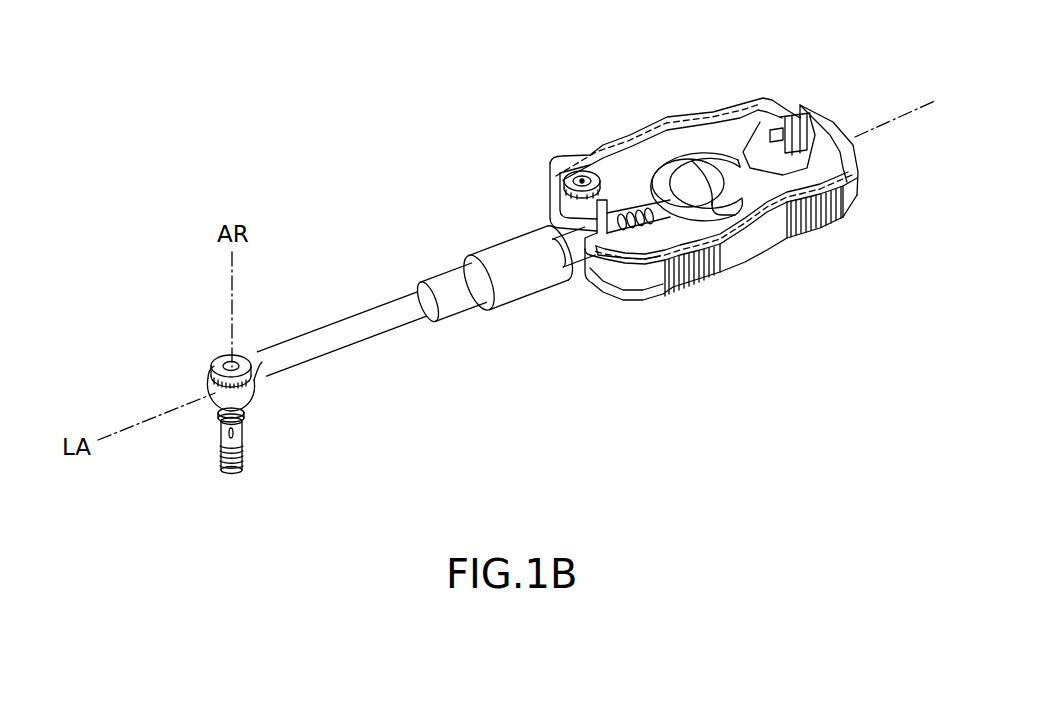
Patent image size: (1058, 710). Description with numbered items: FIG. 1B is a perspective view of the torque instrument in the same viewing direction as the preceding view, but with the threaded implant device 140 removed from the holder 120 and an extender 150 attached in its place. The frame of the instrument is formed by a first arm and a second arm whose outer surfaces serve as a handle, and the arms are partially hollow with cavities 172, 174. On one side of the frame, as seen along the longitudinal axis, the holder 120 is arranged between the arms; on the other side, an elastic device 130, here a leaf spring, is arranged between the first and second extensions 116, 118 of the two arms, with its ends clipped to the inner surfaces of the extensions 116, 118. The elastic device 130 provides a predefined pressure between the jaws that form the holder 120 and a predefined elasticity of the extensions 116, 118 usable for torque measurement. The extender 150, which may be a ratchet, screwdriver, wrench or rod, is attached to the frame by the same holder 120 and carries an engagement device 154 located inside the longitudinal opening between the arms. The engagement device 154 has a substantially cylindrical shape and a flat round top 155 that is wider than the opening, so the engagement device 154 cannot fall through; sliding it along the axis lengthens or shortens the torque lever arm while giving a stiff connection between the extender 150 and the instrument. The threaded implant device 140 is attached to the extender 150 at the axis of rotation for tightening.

The first extension 116 is at (717, 107).
The second extension 118 is at (800, 240).
The holder 120 is at (562, 222).
The elastic device 130 is at (810, 225).
The threaded implant device 140 is at (233, 475).
The extender 150 is at (347, 345).
The engagement device 154 is at (687, 193).
The flat round top 155 is at (672, 182).
The cavity 172 is at (618, 173).
The cavity 174 is at (642, 258).